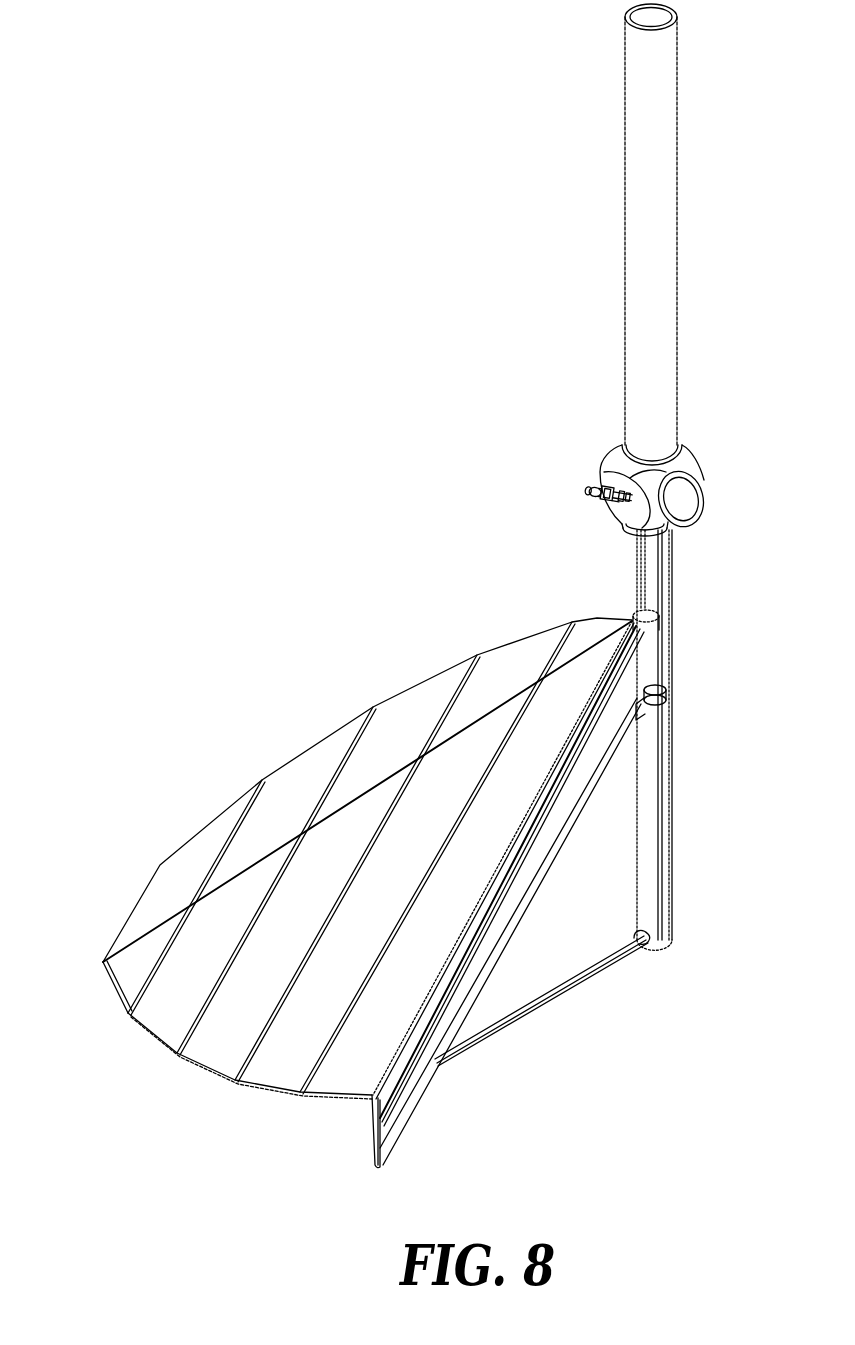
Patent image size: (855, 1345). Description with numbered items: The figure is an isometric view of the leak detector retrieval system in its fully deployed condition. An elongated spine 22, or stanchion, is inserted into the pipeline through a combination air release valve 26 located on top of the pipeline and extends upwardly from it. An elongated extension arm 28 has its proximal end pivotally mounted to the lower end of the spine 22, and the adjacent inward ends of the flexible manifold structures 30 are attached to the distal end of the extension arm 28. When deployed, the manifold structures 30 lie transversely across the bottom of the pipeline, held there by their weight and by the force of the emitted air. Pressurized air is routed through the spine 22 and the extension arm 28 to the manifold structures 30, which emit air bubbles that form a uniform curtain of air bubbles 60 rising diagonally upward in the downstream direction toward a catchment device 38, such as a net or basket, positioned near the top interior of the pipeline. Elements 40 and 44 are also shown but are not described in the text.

The pole 40 is at (633, 176).
The combination air release valve 26 is at (705, 460).
The spine 22 is at (652, 806).
The catchment device 38 is at (650, 708).
The extension arm 28 is at (563, 992).
The curtain of air bubbles 60 is at (386, 748).
The manifold structures 30 is at (148, 1032).
The end fin 44 is at (101, 962).